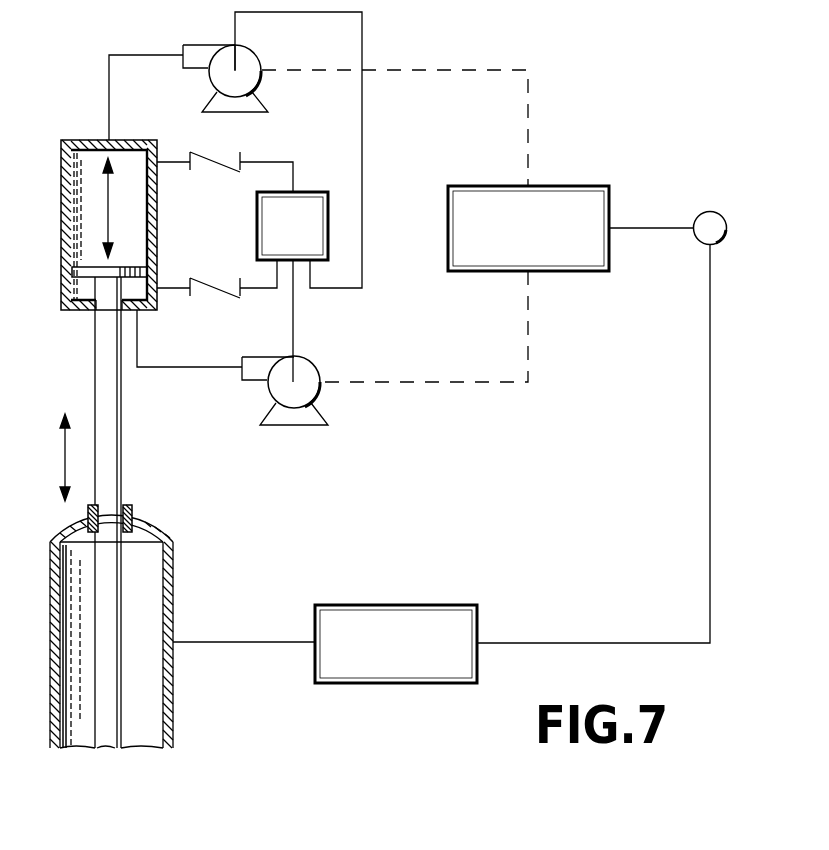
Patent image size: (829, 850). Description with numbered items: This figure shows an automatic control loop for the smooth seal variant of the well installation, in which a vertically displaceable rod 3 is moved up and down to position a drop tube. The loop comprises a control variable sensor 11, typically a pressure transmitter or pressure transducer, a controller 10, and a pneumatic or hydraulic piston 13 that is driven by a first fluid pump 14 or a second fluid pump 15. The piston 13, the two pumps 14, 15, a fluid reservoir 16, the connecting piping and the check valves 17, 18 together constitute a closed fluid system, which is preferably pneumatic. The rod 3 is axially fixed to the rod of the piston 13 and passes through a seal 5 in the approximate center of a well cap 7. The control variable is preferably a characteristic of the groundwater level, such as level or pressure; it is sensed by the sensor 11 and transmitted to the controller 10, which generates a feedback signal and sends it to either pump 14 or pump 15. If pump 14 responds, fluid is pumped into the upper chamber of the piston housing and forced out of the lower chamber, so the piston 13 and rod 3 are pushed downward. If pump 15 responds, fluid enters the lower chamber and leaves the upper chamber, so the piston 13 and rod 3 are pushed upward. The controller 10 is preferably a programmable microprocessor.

The vertically displaceable rod 3 is at (123, 718).
The seal 5 is at (133, 520).
The well cap 7 is at (165, 532).
The controller 10 is at (456, 160).
The control variable sensor 11 is at (722, 216).
The piston 13 is at (68, 140).
The fluid pump 14 is at (201, 45).
The fluid pump 15 is at (316, 372).
The fluid reservoir 16 is at (310, 192).
The valve 17 is at (212, 165).
The valve 18 is at (212, 292).